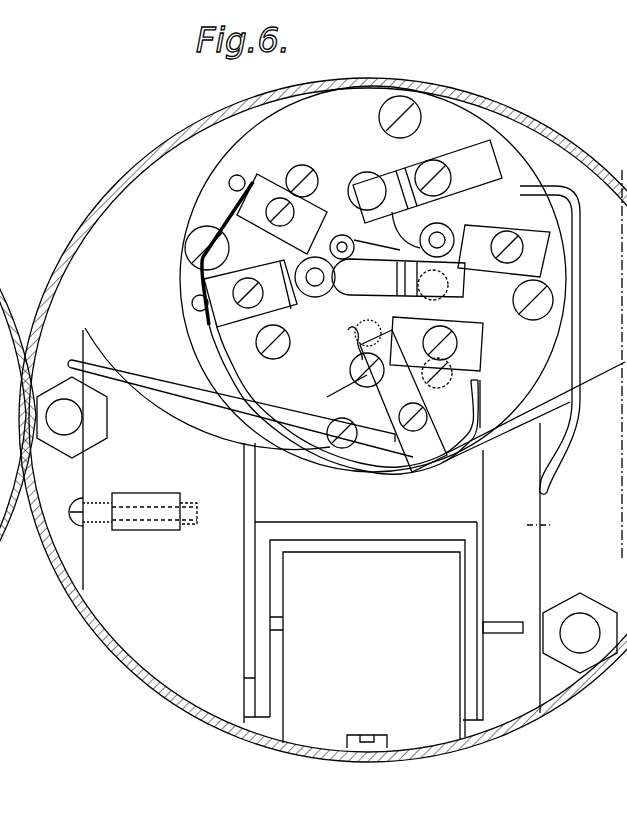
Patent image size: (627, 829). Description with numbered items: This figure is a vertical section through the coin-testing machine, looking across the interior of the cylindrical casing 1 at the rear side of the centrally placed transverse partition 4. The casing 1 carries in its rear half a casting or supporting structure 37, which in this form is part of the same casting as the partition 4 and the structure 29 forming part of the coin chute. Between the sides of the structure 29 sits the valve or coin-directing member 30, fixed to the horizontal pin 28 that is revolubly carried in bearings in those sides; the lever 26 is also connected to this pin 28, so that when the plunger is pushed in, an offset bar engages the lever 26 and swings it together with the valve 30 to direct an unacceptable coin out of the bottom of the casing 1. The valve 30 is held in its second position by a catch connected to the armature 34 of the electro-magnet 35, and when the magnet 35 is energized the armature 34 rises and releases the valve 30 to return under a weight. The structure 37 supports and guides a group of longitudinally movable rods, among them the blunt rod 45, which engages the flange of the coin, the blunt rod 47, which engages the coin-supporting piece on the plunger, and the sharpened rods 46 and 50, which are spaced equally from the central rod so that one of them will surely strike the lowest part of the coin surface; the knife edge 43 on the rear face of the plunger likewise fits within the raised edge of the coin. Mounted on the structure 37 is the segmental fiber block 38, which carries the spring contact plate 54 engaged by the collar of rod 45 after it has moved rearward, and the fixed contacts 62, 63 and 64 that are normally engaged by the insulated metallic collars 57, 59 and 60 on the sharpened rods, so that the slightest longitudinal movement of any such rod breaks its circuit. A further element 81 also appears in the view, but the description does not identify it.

The cylindrical casing 1 is at (183, 133).
The transverse partition 4 is at (206, 476).
The lever 26 is at (403, 401).
The horizontal pin 28 is at (507, 641).
The structure 29 is at (266, 582).
The valve 30 is at (367, 644).
The armature 34 is at (138, 522).
The electro-magnet 35 is at (374, 192).
The supporting structure 37 is at (220, 422).
The block 38 is at (185, 290).
The knife edge 43 is at (290, 219).
The rod 45 is at (423, 231).
The rod 46 is at (392, 335).
The rod 47 is at (345, 389).
The rod 50 is at (314, 290).
The spring contact plate 54 is at (356, 195).
The metallic collar 57 is at (350, 345).
The metallic collar 59 is at (365, 243).
The metallic collar 60 is at (250, 285).
The fixed contact 62 is at (507, 230).
The fixed contact 63 is at (282, 201).
The fixed contact 64 is at (259, 293).
The stop 81 is at (469, 380).